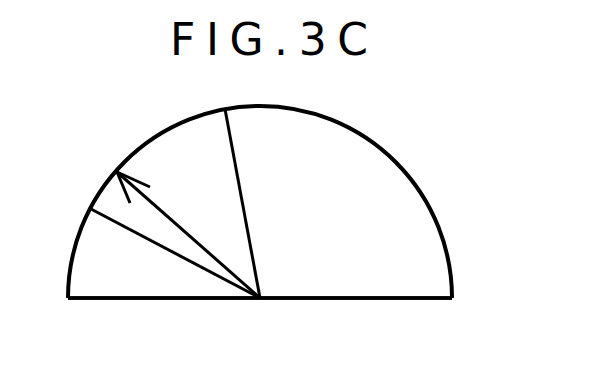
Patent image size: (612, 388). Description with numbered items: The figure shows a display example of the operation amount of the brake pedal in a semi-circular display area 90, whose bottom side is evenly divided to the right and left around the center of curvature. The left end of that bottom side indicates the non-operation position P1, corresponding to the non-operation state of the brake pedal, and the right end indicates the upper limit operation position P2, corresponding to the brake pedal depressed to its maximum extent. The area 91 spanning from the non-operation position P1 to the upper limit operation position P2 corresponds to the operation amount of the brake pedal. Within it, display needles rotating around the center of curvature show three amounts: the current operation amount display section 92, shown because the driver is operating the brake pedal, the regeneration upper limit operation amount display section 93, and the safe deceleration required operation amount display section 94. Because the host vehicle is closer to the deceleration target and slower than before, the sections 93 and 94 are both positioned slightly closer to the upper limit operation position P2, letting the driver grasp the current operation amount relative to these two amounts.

The display area 90 is at (398, 163).
The area 91 is at (387, 248).
The current operation amount display section 92 is at (160, 207).
The regeneration upper limit operation amount display section 93 is at (250, 190).
The safe deceleration required operation amount display section 94 is at (106, 214).
The non-operation position P1 is at (157, 302).
The upper limit operation position P2 is at (343, 302).